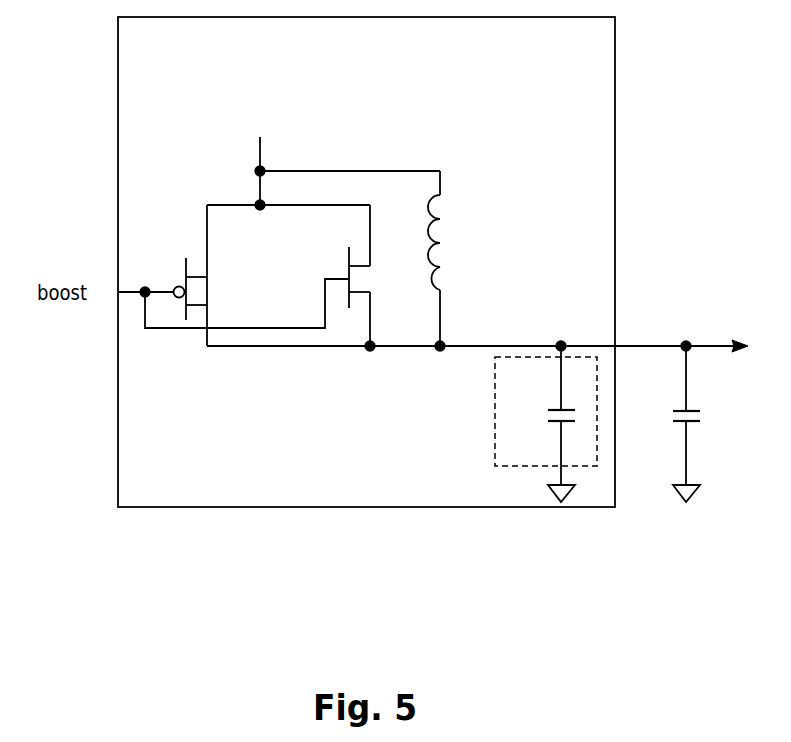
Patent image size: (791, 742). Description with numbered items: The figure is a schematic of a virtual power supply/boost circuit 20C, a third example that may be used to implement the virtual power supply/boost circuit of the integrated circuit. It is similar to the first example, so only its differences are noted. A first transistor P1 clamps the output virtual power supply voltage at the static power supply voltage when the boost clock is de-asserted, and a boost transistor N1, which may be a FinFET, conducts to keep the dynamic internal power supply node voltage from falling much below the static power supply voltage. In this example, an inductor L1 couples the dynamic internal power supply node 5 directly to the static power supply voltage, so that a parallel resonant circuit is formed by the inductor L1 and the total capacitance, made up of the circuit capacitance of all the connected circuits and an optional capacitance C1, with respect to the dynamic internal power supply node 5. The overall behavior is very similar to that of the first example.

The virtual power supply/boost circuit 20C is at (523, 56).
The dynamic internal power supply node 5 is at (653, 346).
The first transistor P1 is at (213, 275).
The boost transistor N1 is at (341, 275).
The inductor L1 is at (452, 258).
The optional capacitance C1 is at (546, 424).